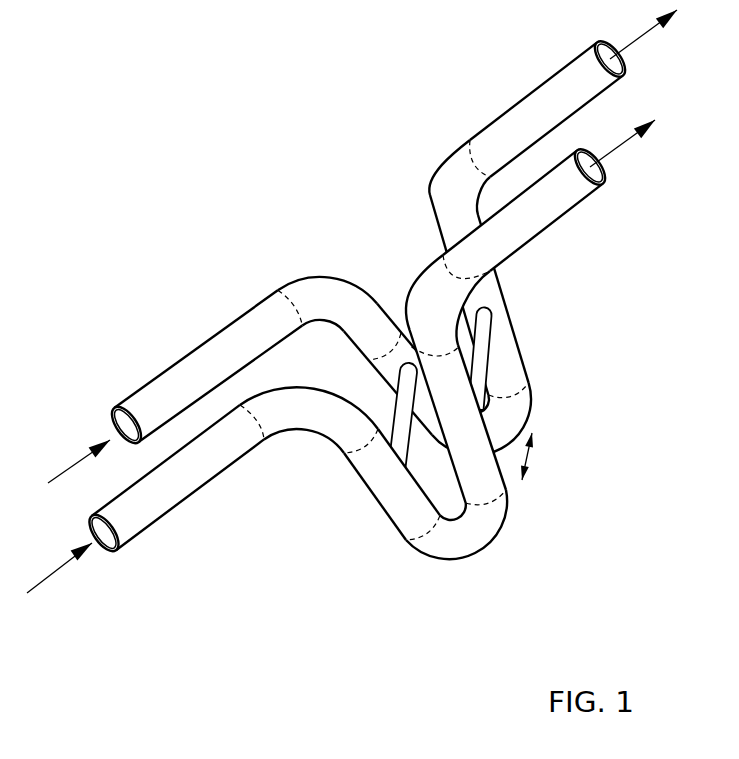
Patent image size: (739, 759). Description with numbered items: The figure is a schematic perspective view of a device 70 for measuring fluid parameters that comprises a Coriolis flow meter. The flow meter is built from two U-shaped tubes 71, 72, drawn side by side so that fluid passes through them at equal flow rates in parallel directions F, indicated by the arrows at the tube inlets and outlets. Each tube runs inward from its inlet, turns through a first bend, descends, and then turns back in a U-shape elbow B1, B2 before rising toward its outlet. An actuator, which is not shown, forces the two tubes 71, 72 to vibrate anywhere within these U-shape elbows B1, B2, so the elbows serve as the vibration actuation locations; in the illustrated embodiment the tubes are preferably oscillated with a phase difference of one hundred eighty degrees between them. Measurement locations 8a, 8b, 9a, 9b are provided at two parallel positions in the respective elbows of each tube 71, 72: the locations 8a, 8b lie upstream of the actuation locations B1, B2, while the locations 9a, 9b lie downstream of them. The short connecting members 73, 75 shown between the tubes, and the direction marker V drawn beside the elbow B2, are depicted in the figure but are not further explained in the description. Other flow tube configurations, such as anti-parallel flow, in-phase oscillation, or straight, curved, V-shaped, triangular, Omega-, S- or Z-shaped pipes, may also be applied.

The device for measuring fluid parameters 70 is at (340, 146).
The U-shaped tube 71 is at (194, 363).
The U-shaped tube 72 is at (175, 494).
The measurement location 8a is at (386, 357).
The measurement location 8b is at (385, 496).
The measurement location 9a is at (491, 298).
The measurement location 9b is at (492, 482).
The first spacer rod 73 is at (478, 352).
The second spacer rod 75 is at (402, 427).
The U-shape elbow B1 is at (457, 553).
The U-shape elbow B2 is at (511, 425).
The vertical direction V is at (539, 458).
The flow direction F is at (352, 313).